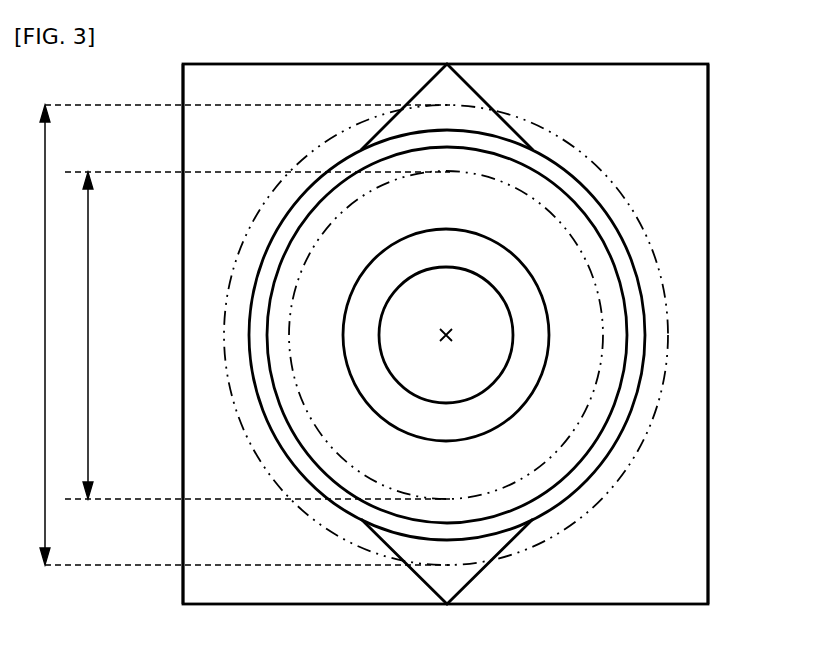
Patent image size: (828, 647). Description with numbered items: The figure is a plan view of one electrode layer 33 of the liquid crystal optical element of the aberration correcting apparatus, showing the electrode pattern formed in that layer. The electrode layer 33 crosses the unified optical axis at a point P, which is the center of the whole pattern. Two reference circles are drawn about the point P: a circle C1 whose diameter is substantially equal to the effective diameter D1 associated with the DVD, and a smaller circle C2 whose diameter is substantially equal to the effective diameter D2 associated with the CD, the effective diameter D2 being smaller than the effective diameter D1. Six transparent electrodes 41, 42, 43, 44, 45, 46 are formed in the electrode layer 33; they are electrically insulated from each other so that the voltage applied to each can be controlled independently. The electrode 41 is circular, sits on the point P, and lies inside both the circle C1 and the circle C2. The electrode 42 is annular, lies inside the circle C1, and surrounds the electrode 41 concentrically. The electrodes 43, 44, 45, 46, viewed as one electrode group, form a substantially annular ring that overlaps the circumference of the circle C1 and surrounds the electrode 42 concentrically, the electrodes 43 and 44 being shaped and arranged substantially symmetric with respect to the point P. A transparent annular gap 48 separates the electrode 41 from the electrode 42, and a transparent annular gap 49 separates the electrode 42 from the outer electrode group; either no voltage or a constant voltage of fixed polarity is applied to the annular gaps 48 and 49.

The electrode layer 33 is at (708, 64).
The electrode 41 is at (405, 349).
The electrode 42 is at (345, 243).
The electrode 43 is at (700, 136).
The electrode 44 is at (196, 544).
The electrode 45 is at (447, 86).
The electrode 46 is at (450, 578).
The annular gap 48 is at (510, 278).
The annular gap 49 is at (632, 290).
The point P is at (446, 351).
The circle C1 is at (643, 437).
The circle C2 is at (602, 380).
The effective diameter D1 is at (233, 335).
The effective diameter D2 is at (254, 335).